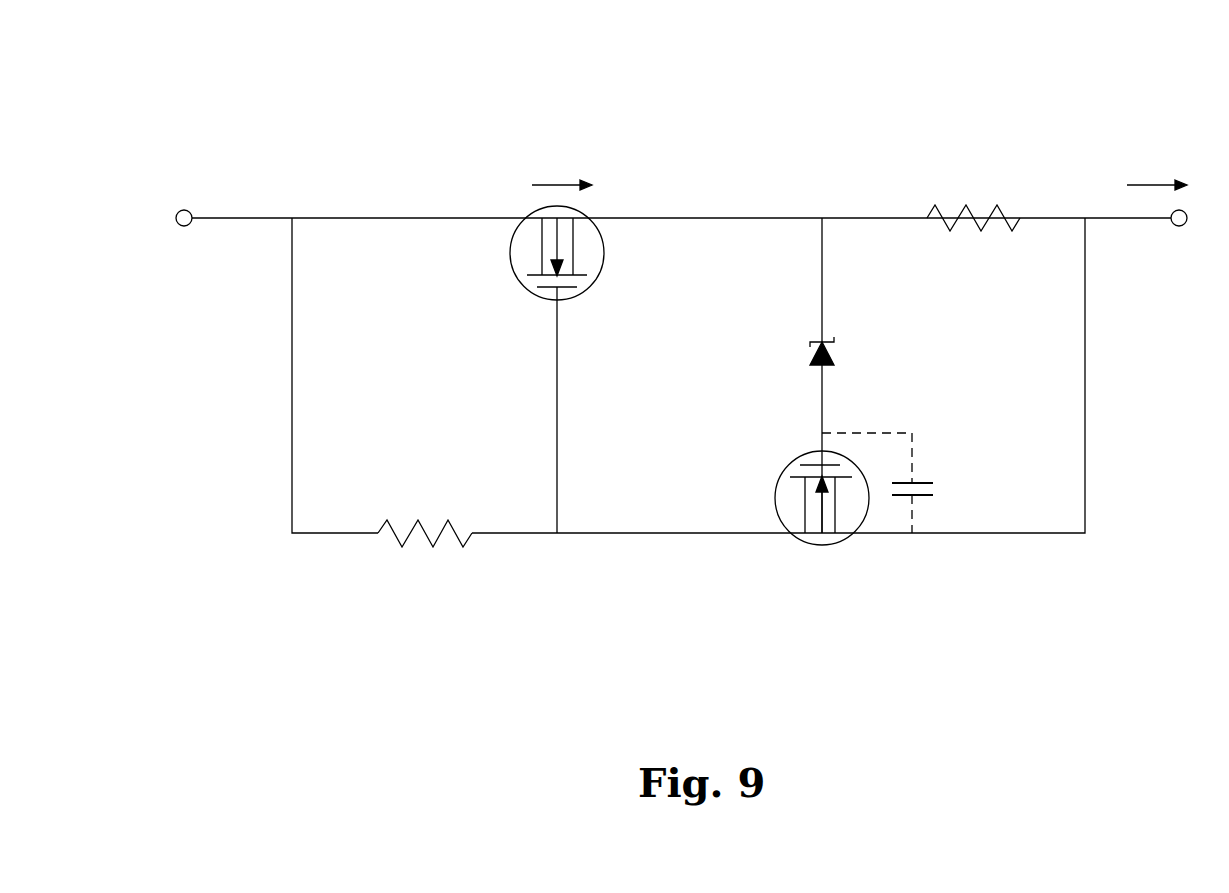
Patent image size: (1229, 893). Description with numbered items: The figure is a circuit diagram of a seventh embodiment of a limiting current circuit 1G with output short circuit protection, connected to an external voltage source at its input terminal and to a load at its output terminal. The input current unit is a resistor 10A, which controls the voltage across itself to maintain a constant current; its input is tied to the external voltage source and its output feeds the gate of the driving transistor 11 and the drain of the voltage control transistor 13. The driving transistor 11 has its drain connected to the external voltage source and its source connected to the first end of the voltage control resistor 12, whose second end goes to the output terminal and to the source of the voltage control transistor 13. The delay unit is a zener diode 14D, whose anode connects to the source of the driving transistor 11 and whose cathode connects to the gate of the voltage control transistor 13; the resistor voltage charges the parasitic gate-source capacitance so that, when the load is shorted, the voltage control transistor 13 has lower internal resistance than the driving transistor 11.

The limiting current circuit 1G is at (163, 124).
The resistor 10A is at (413, 535).
The driving transistor 11 is at (545, 212).
The voltage control resistor 12 is at (972, 208).
The voltage control transistor 13 is at (820, 547).
The zener diode 14D is at (821, 340).